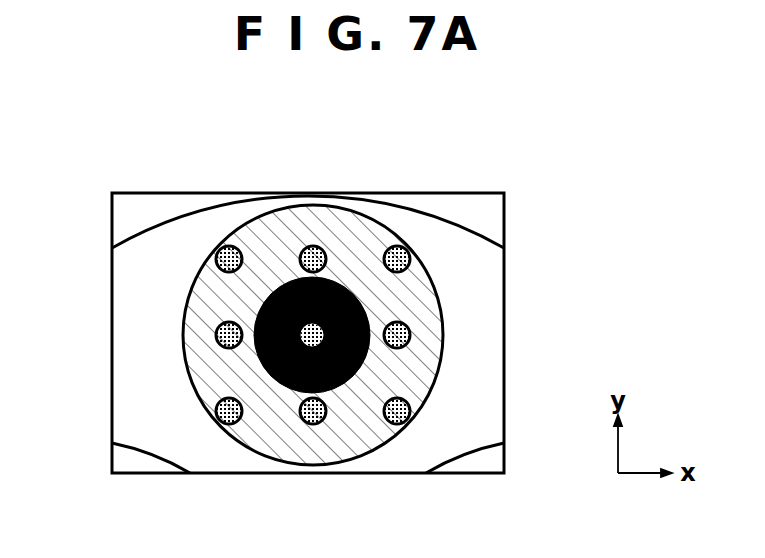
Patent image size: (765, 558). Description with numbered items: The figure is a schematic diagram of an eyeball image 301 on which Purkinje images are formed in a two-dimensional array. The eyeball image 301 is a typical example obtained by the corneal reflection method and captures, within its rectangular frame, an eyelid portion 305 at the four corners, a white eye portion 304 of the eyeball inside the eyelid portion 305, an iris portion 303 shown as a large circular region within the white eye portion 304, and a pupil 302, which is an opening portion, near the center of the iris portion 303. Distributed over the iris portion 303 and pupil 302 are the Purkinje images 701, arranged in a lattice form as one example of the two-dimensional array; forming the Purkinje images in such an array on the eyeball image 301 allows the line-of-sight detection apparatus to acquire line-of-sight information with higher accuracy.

The eyeball image 301 is at (227, 143).
The pupil 302 is at (347, 283).
The iris portion 303 is at (360, 435).
The white eye portion 304 is at (487, 401).
The eyelid portion 305 is at (147, 205).
The marks 701 is at (216, 334).